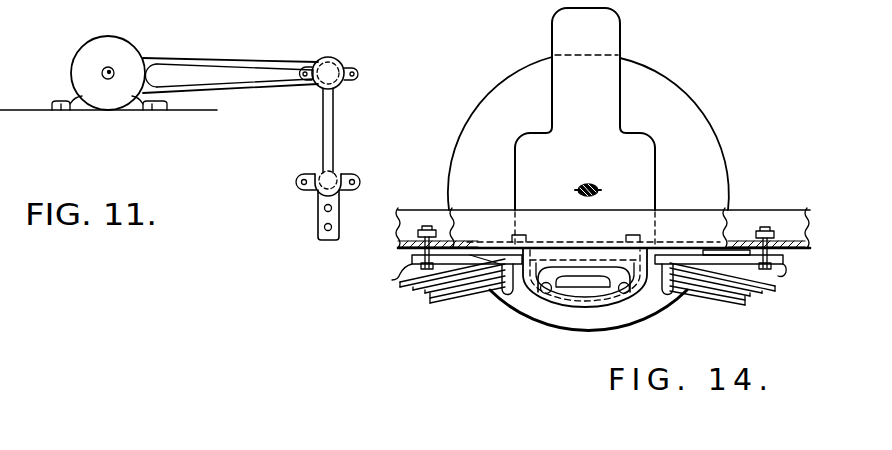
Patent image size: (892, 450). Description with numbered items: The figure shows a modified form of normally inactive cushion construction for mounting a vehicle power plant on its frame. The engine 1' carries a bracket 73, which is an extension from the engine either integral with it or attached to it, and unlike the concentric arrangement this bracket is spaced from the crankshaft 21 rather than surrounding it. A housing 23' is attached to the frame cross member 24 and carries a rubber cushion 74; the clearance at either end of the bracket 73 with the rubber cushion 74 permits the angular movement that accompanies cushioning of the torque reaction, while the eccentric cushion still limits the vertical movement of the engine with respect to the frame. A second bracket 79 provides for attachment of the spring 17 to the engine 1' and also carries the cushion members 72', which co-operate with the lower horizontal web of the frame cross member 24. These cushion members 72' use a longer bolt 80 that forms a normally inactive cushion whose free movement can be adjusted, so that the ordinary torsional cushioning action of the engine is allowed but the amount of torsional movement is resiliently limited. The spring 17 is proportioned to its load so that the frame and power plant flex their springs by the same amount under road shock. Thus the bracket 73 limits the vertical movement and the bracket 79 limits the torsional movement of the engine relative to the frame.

The engine 1' is at (588, 169).
The crankshaft 21 is at (590, 188).
The frame cross member 24 is at (733, 208).
The bolt 80 is at (427, 213).
The cushion members 72' is at (597, 231).
The bracket 79 is at (400, 278).
The spring 17 is at (437, 302).
The rubber cushion 74 is at (544, 289).
The bracket 73 is at (568, 288).
The housing 23' is at (579, 312).